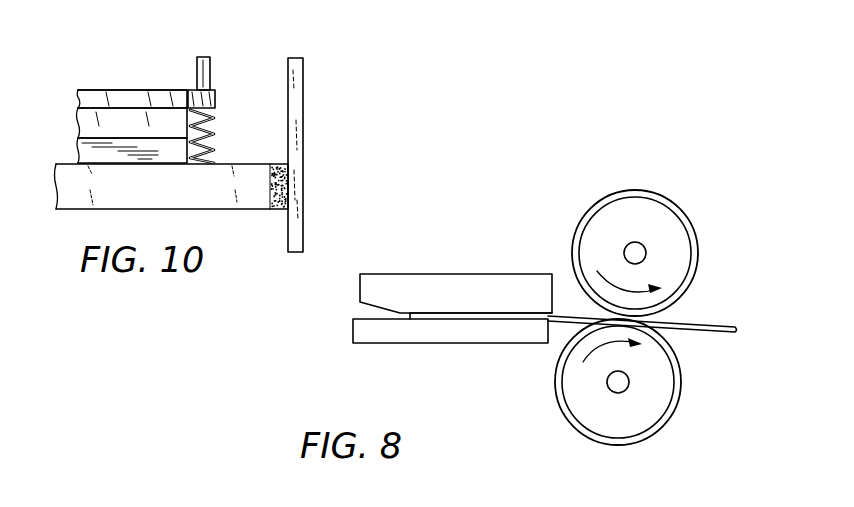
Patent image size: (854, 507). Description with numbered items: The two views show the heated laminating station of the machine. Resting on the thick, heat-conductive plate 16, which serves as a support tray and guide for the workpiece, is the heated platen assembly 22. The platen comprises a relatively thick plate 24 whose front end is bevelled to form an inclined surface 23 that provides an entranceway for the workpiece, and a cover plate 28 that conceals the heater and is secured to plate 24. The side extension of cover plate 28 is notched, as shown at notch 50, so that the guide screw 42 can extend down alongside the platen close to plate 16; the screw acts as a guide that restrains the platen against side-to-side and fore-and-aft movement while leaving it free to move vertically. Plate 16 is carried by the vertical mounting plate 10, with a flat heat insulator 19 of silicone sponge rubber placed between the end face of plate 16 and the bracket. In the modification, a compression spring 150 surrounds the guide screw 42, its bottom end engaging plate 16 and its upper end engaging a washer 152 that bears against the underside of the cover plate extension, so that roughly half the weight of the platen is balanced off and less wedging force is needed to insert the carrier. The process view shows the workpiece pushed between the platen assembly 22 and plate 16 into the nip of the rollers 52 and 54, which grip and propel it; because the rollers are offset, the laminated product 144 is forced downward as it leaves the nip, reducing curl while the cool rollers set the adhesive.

In FIG. 10, the vertical mounting plate 10 is at (303, 118).
In FIG. 10, the plate 16 is at (167, 197).
In FIG. 8, the plate 16 is at (432, 330).
In FIG. 10, the heat insulator 19 is at (280, 188).
In FIG. 10, the heated platen 22 is at (131, 86).
In FIG. 8, the heated platen 22 is at (432, 270).
In FIG. 10, the inclined surface 23 is at (103, 150).
In FIG. 8, the inclined surface 23 is at (368, 305).
In FIG. 10, the platen plate 24 is at (82, 120).
In FIG. 10, the cover plate 28 is at (107, 90).
In FIG. 10, the screw 42 is at (208, 73).
In FIG. 10, the notch 50 is at (180, 92).
In FIG. 8, the roller 52 is at (698, 248).
In FIG. 8, the roller 54 is at (682, 381).
In FIG. 8, the laminated product 144 is at (715, 326).
In FIG. 10, the compression spring 150 is at (216, 141).
In FIG. 10, the washer 152 is at (215, 112).